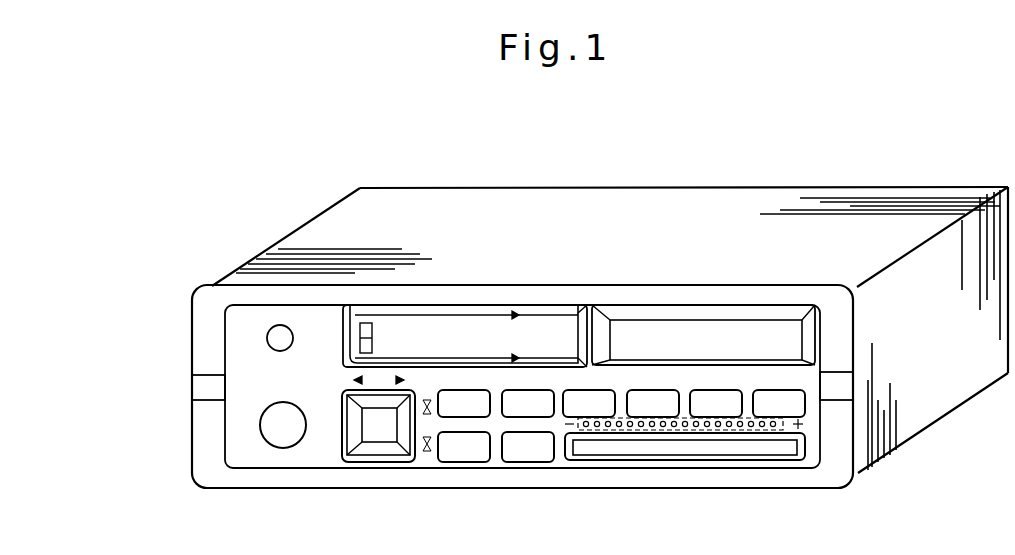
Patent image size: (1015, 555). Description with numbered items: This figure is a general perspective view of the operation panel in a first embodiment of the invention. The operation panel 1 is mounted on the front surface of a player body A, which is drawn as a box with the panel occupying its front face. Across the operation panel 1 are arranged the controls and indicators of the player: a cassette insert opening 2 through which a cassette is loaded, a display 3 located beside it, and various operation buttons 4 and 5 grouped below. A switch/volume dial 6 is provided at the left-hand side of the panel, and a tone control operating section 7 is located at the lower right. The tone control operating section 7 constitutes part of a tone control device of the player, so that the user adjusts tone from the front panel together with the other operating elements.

The player body A is at (853, 190).
The operation panel 1 is at (742, 283).
The cassette insert opening 2 is at (472, 330).
The display 3 is at (665, 330).
The operation buttons 4 is at (383, 450).
The operation buttons 5 is at (523, 405).
The switch/volume dial 6 is at (285, 442).
The tone control operating section 7 is at (683, 466).